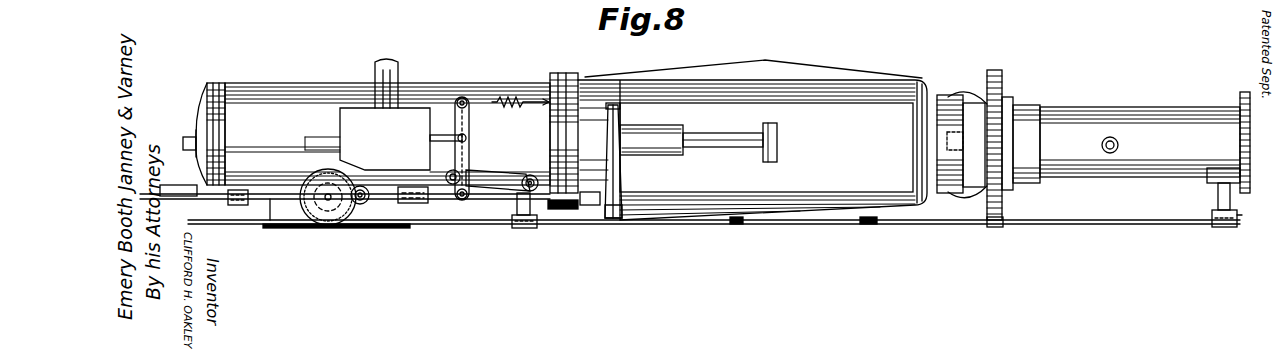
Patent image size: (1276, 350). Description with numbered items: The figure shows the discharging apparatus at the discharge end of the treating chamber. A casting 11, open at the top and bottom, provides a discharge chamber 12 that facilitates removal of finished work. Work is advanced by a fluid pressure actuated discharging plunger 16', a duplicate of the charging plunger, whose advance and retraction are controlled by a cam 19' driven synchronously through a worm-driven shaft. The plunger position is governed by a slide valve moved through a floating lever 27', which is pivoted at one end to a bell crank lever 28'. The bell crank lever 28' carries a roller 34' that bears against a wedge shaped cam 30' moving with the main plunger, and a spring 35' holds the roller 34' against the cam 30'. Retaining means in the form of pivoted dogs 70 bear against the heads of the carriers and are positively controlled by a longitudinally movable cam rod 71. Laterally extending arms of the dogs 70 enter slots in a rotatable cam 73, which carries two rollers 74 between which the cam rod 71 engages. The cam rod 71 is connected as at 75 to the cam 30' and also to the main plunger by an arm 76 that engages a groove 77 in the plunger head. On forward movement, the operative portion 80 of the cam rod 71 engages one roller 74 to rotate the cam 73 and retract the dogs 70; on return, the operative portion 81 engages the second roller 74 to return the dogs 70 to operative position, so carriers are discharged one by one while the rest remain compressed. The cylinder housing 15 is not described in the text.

The motor housing cylinder 15 is at (300, 94).
The wedge shaped cam 30' is at (345, 182).
The cam 19' is at (328, 218).
The floating lever 27' is at (449, 129).
The spring 35' is at (519, 81).
The roller 34' is at (525, 158).
The bell crank lever 28' is at (464, 211).
The groove 77 is at (618, 105).
The arm 76 is at (616, 140).
The discharging plunger 16' is at (698, 137).
The discharge chamber 12 is at (803, 125).
The casting 11 is at (878, 90).
The pivoted dogs 70 is at (970, 96).
The rotatable cam 73 is at (996, 82).
The connection 75 is at (612, 206).
The cam rod 71 is at (683, 225).
The operative portion 80 is at (735, 226).
The operative portion 81 is at (868, 225).
The rollers 74 is at (999, 228).